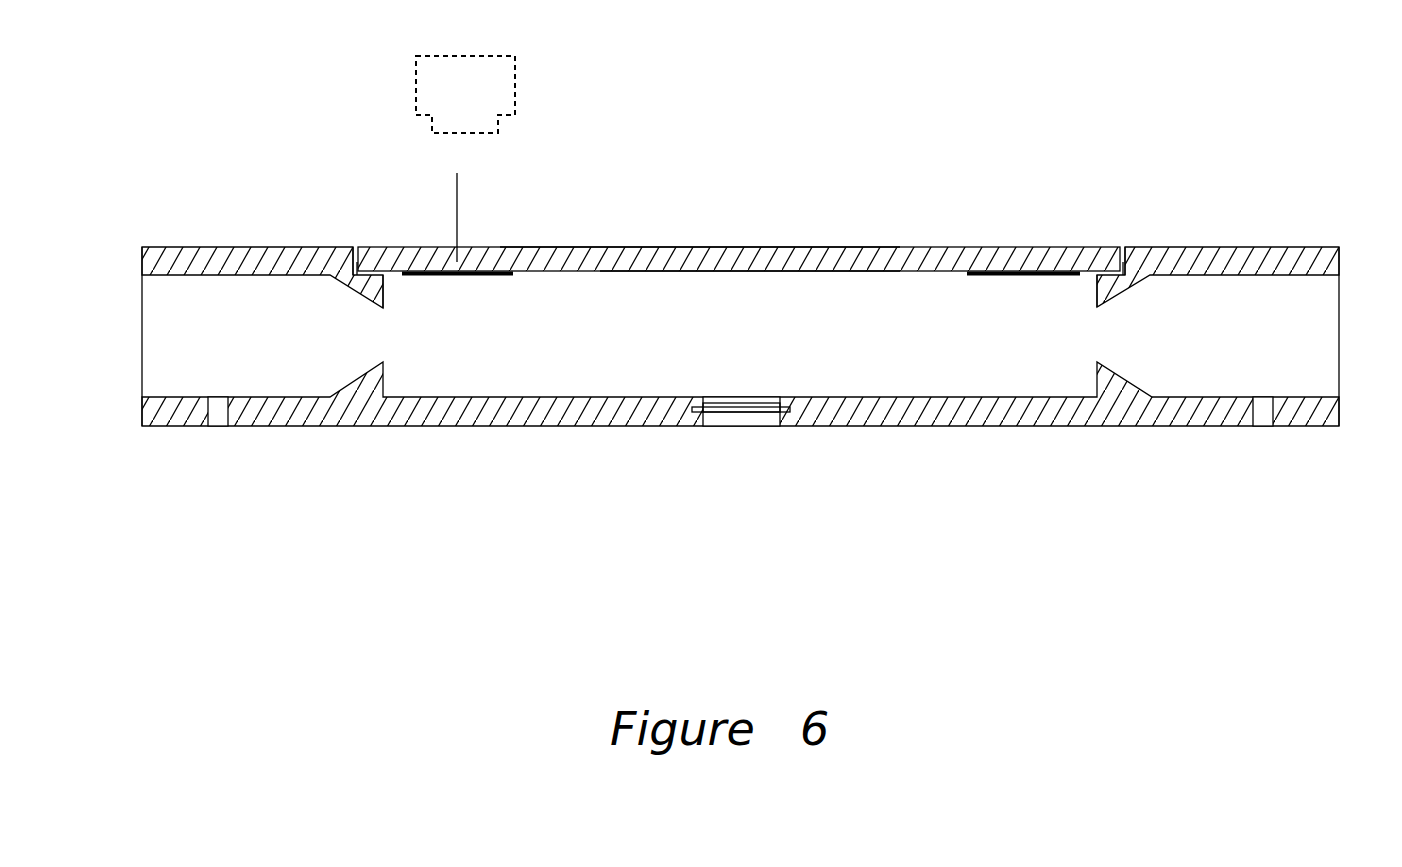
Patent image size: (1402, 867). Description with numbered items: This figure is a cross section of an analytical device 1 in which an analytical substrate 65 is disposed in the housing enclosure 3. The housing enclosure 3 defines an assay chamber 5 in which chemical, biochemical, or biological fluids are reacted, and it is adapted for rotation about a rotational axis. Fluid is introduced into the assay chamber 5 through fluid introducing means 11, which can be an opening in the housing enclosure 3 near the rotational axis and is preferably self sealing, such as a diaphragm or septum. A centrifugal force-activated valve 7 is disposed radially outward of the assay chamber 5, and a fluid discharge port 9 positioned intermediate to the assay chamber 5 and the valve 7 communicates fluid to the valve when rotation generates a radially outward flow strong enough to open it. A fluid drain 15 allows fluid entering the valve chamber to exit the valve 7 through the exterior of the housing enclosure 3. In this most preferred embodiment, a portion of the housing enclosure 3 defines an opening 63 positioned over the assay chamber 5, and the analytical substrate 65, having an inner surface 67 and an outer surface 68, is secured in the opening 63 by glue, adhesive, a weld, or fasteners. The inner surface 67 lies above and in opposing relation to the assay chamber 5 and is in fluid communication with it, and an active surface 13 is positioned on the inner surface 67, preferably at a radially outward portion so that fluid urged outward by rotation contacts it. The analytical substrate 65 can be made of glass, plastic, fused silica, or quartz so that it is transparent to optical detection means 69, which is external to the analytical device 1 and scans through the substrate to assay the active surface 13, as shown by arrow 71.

The analytical device 1 is at (673, 96).
The housing enclosure 3 is at (1248, 246).
The assay chamber 5 is at (935, 365).
The centrifugal force-activated valve 7 is at (182, 334).
The fluid discharge port 9 is at (373, 338).
The fluid introducing means 11 is at (757, 413).
The active surface 13 is at (452, 276).
The fluid drain 15 is at (218, 415).
The opening 63 is at (350, 262).
The analytical substrate 65 is at (837, 247).
The inner surface 67 is at (780, 271).
The outer surface 68 is at (687, 247).
The optical detection means 69 is at (465, 94).
The arrow 71 is at (478, 217).